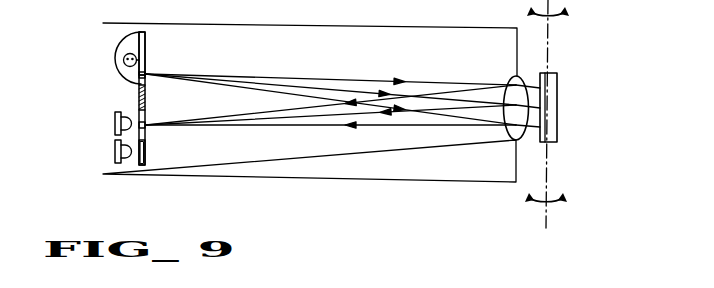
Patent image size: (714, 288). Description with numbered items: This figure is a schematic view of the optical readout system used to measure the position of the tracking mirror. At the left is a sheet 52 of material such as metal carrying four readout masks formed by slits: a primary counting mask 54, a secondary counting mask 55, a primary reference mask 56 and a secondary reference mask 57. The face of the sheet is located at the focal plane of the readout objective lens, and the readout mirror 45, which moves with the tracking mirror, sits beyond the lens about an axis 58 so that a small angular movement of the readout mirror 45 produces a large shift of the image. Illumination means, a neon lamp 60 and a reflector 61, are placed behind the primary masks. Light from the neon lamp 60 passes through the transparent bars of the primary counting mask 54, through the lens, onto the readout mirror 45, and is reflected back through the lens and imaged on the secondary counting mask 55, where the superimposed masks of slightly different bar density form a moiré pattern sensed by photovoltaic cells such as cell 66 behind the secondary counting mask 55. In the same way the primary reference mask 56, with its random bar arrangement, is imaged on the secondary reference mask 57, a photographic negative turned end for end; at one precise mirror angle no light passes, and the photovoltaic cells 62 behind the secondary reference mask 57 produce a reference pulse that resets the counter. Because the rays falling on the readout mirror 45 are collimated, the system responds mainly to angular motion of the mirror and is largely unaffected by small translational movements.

The readout mirror 45 is at (542, 79).
The mask sheet 52 is at (139, 97).
The primary counting mask 54 is at (146, 48).
The secondary counting mask 55 is at (146, 153).
The primary reference mask 56 is at (147, 76).
The secondary reference mask 57 is at (147, 127).
The mirror rotation axis 58 is at (549, 157).
The neon lamp 60 is at (123, 62).
The reflector 61 is at (125, 37).
The photovoltaic cells 62 is at (115, 124).
The photovoltaic cell 66 is at (115, 152).